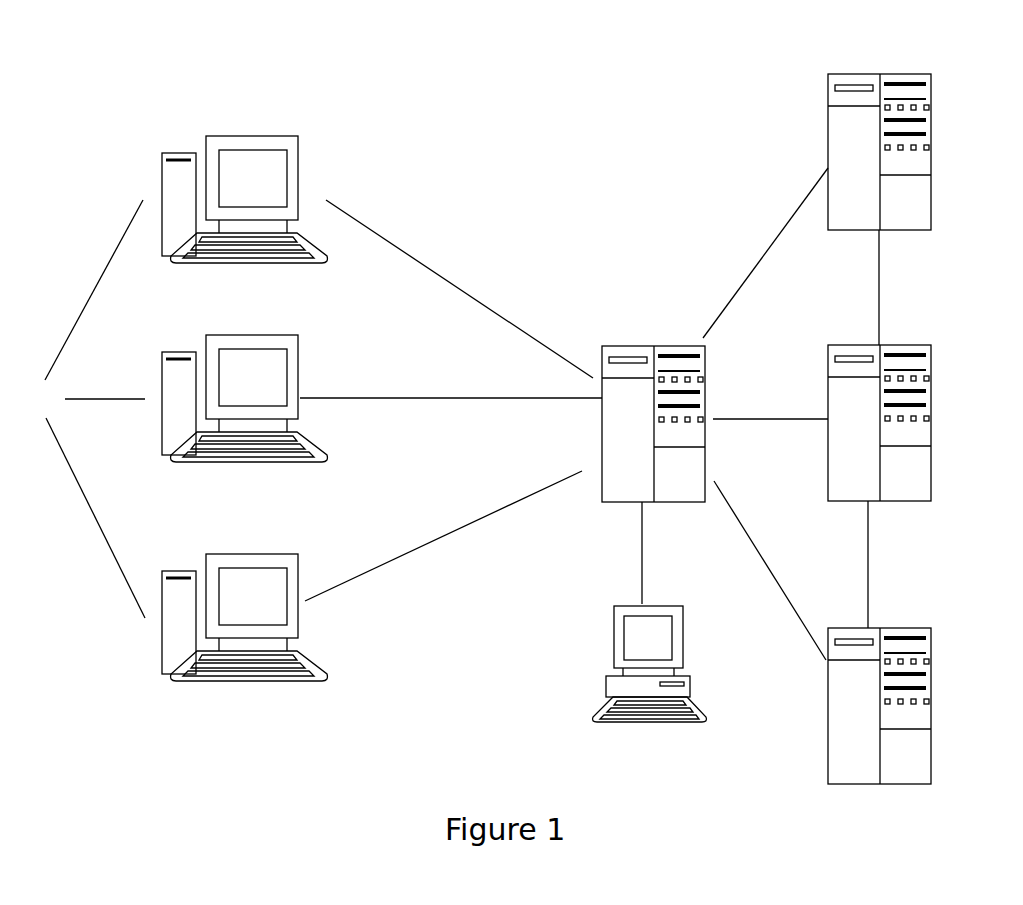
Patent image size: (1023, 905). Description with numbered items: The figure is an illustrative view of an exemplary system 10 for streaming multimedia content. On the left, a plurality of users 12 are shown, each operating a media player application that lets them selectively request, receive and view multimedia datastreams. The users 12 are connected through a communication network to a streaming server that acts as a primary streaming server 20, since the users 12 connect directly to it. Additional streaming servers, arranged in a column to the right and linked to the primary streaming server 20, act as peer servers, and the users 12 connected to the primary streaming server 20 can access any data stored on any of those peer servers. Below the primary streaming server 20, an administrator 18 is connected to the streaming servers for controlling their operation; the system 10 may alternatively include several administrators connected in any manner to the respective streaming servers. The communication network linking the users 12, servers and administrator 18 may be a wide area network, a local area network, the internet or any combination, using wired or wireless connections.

The system 10 is at (223, 41).
The users 12 is at (85, 409).
The administrator 18 is at (654, 722).
The primary streaming server 20 is at (653, 392).